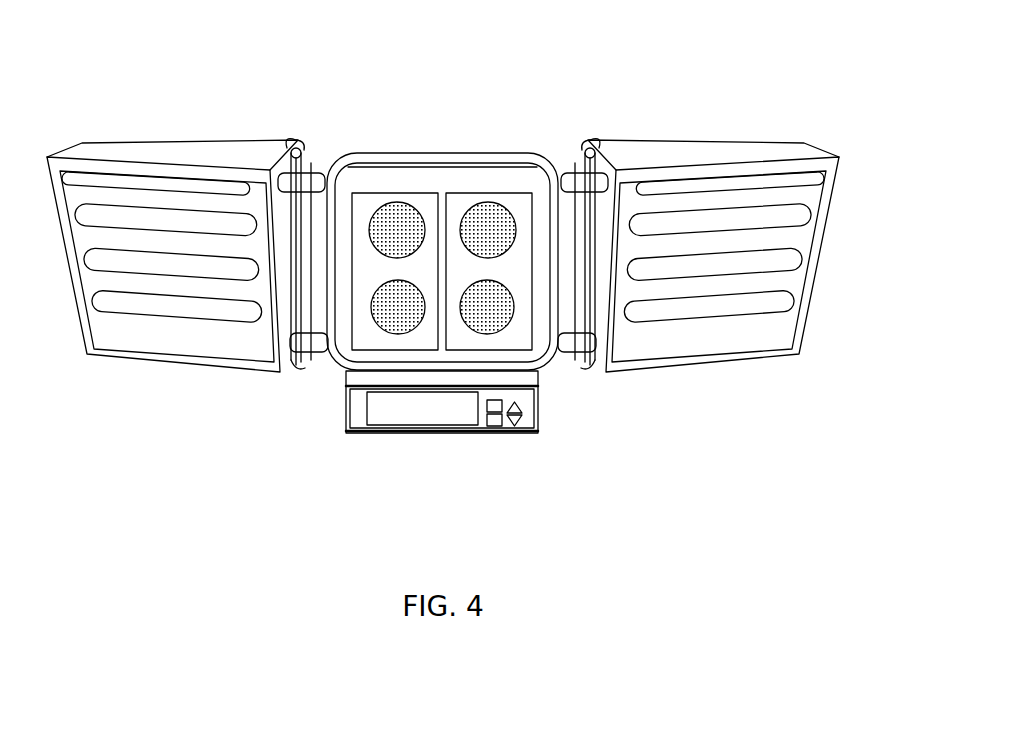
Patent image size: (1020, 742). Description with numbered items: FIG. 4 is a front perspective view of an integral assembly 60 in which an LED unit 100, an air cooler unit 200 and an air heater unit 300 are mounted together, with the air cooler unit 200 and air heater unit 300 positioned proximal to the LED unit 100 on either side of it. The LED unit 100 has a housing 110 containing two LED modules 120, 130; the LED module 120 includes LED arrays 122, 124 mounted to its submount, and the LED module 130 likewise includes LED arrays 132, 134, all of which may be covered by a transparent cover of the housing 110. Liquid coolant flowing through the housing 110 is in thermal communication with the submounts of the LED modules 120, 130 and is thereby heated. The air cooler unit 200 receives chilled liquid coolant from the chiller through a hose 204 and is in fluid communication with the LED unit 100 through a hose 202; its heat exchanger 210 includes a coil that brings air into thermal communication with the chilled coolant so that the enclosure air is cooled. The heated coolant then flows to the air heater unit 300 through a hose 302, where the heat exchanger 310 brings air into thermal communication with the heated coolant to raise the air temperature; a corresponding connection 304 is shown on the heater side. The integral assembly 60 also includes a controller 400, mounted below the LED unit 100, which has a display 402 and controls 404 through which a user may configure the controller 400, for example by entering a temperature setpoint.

The integral assembly 60 is at (444, 246).
The LED unit 100 is at (441, 238).
The housing 110 is at (448, 425).
The LED module 120 is at (372, 239).
The LED array 122 is at (393, 203).
The LED array 124 is at (385, 320).
The LED module 130 is at (511, 238).
The LED array 132 is at (490, 203).
The LED array 134 is at (500, 320).
The air cooler unit 200 is at (195, 263).
The hose 202 is at (308, 182).
The hose 204 is at (305, 350).
The heat exchanger 210 is at (192, 328).
The air heater unit 300 is at (689, 263).
The hose 302 is at (580, 182).
The right lower hinge 304 is at (582, 350).
The heat exchanger 310 is at (694, 328).
The controller 400 is at (430, 434).
The display 402 is at (449, 418).
The controls 404 is at (508, 439).